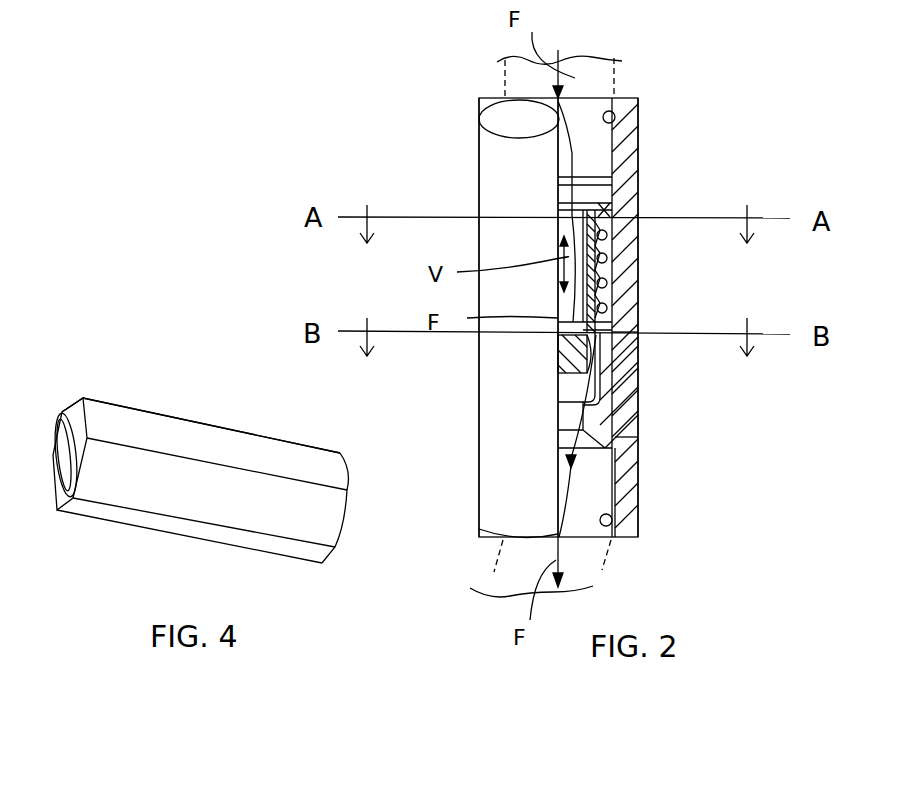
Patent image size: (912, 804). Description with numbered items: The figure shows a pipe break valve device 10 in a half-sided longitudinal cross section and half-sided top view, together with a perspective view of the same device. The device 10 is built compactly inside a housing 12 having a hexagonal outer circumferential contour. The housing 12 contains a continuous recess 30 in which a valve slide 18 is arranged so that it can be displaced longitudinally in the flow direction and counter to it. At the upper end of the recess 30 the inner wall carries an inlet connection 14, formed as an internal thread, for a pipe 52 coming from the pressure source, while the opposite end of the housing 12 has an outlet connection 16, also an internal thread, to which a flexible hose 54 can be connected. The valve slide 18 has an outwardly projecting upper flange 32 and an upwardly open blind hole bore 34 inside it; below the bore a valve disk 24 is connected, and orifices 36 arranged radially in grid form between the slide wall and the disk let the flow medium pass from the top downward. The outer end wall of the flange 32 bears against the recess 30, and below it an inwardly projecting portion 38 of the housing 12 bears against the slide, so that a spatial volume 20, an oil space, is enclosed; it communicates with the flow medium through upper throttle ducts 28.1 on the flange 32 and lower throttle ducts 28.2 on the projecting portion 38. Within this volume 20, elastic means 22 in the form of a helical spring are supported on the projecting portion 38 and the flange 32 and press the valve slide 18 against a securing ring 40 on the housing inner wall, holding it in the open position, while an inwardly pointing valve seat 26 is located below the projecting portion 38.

In FIG. 2, the pipe break valve device 10 is at (376, 86).
In FIG. 4, the pipe break valve device 10 is at (100, 362).
In FIG. 2, the housing 12 is at (490, 217).
In FIG. 4, the housing 12 is at (157, 425).
In FIG. 2, the inlet connection 14 is at (614, 124).
In FIG. 2, the outlet connection 16 is at (637, 530).
In FIG. 2, the valve slide 18 is at (606, 262).
In FIG. 2, the spatial volume 20 is at (600, 280).
In FIG. 2, the elastic means 22 is at (600, 324).
In FIG. 2, the valve disk 24 is at (560, 360).
In FIG. 2, the valve seat 26 is at (600, 392).
In FIG. 2, the upper throttle ducts 28.1 is at (612, 203).
In FIG. 2, the lower throttle ducts 28.2 is at (600, 372).
In FIG. 2, the recess 30 is at (482, 137).
In FIG. 2, the upper flange 32 is at (613, 200).
In FIG. 2, the blind hole bore 34 is at (577, 228).
In FIG. 2, the orifices 36 is at (598, 333).
In FIG. 2, the projecting portion 38 is at (640, 334).
In FIG. 2, the securing ring 40 is at (590, 200).
In FIG. 2, the pipe 52 is at (602, 74).
In FIG. 2, the flexible hose 54 is at (483, 590).